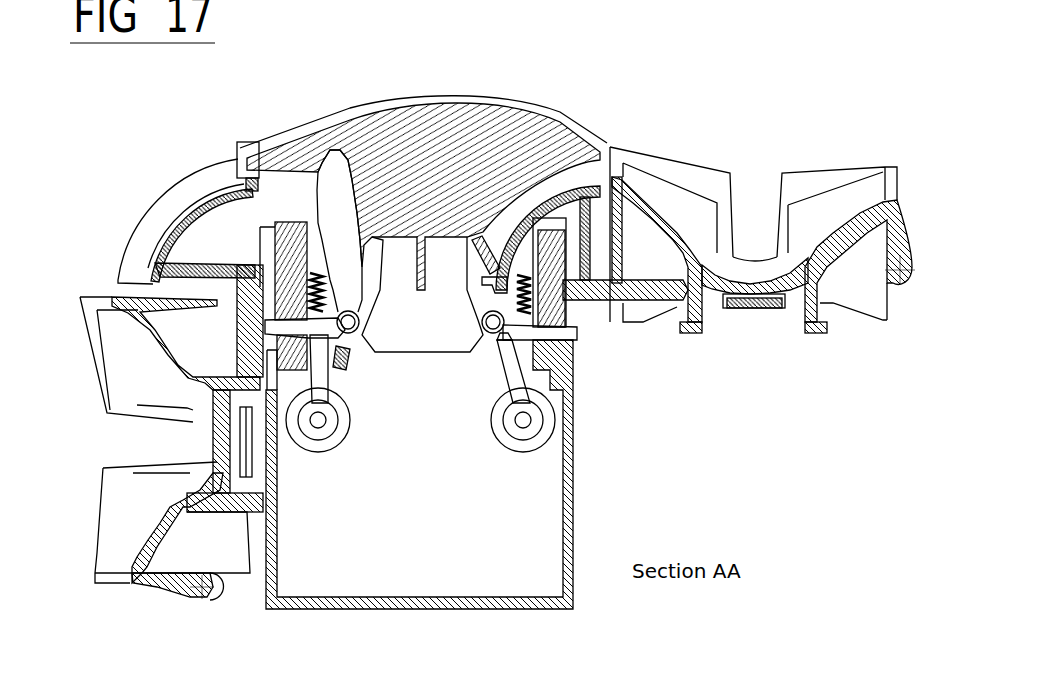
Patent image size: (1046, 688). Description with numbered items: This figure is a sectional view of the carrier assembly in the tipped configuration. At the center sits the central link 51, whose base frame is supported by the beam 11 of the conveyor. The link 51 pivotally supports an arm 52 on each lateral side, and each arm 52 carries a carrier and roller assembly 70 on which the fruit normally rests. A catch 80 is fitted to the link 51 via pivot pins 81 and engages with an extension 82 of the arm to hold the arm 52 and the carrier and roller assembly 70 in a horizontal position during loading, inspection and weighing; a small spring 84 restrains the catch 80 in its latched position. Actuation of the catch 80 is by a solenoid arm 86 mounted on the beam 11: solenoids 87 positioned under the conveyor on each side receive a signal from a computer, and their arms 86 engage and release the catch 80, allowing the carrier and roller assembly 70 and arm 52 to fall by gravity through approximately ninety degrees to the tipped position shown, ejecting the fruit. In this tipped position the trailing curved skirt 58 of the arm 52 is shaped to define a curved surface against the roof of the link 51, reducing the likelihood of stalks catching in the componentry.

The beam 11 is at (576, 502).
The central link 51 is at (447, 97).
The arm 52 is at (172, 175).
The curved skirt 58 is at (152, 222).
The carrier and roller assembly 70 is at (714, 146).
The catch 80 is at (361, 258).
The pivot pins 81 is at (478, 338).
The extension 82 is at (241, 175).
The small spring 84 is at (318, 272).
The solenoid arm 86 is at (495, 388).
The solenoids 87 is at (499, 455).